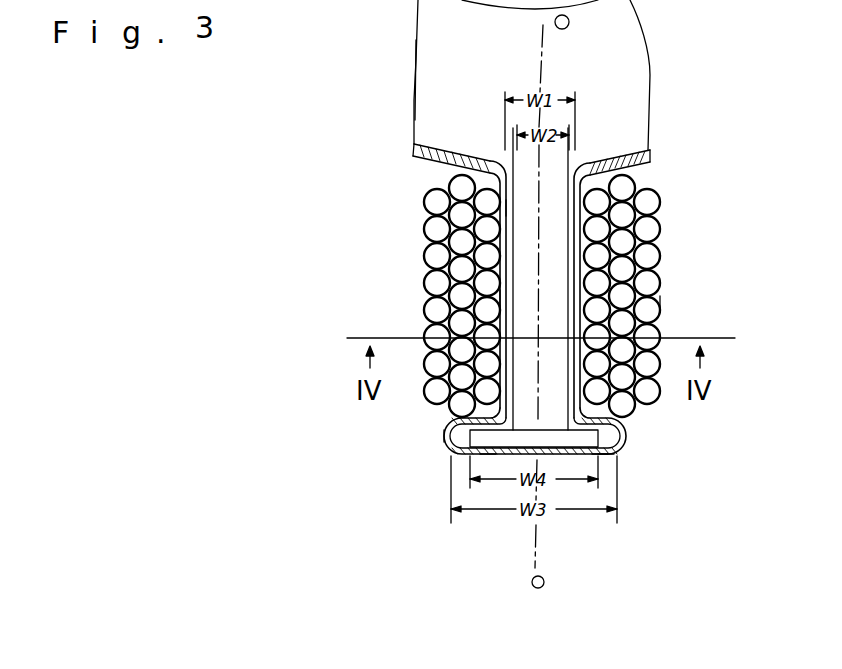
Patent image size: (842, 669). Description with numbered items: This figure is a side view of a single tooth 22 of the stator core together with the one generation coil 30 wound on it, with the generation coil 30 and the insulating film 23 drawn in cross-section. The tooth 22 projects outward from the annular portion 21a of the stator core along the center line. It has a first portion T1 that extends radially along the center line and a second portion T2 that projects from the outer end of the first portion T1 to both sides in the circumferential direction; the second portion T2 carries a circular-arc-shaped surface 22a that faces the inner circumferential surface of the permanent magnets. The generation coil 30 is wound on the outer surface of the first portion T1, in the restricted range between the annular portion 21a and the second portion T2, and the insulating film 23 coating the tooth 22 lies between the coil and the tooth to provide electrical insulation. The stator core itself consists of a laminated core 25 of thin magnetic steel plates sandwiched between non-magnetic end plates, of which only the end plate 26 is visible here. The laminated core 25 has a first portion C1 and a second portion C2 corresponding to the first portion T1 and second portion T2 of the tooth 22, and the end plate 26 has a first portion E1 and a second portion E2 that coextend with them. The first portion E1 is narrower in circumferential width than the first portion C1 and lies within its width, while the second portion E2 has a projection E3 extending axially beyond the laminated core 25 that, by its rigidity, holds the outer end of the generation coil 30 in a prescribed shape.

The annular portion 21a is at (630, 77).
The end plate 26 is at (626, 131).
The insulating film 23 is at (416, 166).
The laminated core 25 is at (648, 165).
The tooth 22 is at (522, 259).
The circular-arc-shaped surface 22a is at (568, 455).
The generation coil 30 is at (647, 230).
The first portion of end plate E1 is at (530, 207).
The first portion of laminated core C1 is at (510, 298).
The first portion of tooth T1 is at (657, 304).
The second portion of laminated core C2 is at (455, 436).
The second portion of tooth T2 is at (600, 454).
The second portion of end plate E2 is at (488, 462).
The projection E3 is at (600, 470).